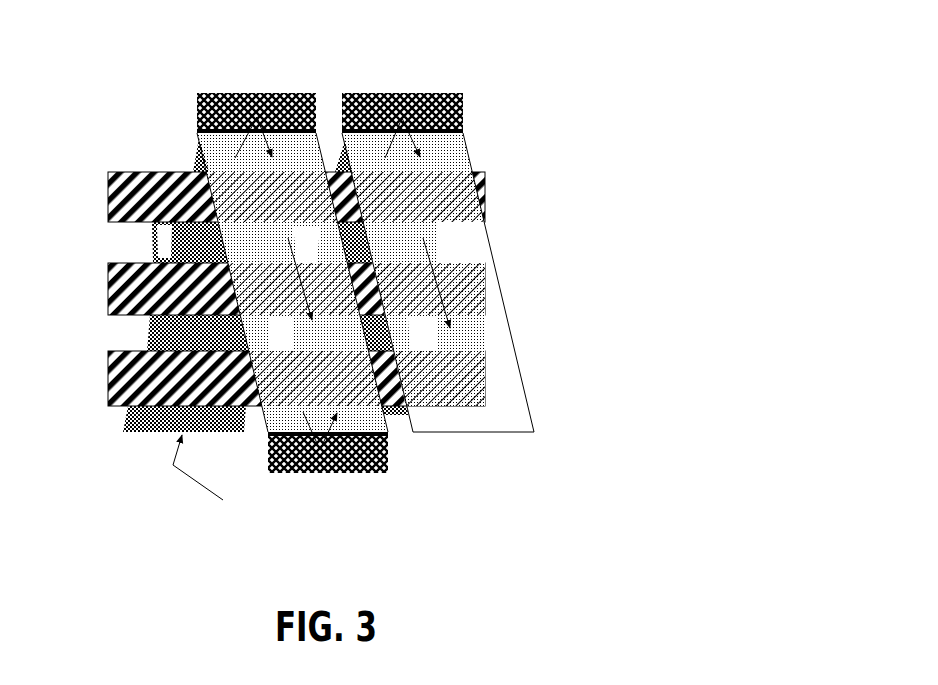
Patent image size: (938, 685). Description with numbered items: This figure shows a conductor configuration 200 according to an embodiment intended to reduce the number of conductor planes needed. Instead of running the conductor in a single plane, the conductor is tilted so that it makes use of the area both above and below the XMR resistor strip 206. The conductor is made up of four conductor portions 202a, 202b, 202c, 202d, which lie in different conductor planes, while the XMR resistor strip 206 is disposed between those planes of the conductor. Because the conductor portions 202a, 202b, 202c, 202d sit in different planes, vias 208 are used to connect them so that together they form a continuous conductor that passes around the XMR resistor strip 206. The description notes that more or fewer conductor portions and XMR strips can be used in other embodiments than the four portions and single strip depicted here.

The conductor configuration 200 is at (332, 282).
The conductor portion 202a is at (138, 420).
The conductor portion 202b is at (200, 147).
The conductor portion 202c is at (392, 412).
The conductor portion 202d is at (512, 423).
The XMR resistor strip 206 is at (133, 202).
The via 208 is at (220, 100).